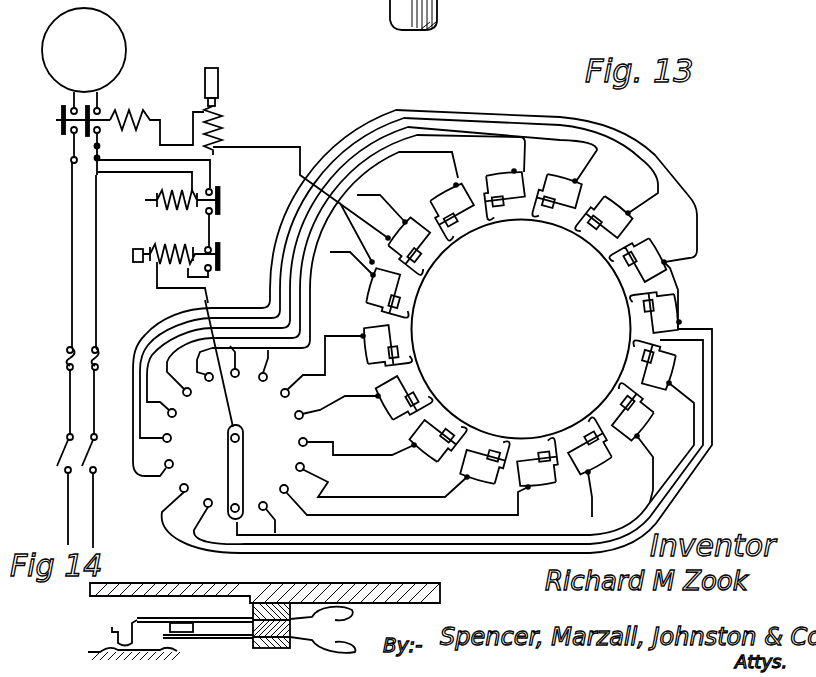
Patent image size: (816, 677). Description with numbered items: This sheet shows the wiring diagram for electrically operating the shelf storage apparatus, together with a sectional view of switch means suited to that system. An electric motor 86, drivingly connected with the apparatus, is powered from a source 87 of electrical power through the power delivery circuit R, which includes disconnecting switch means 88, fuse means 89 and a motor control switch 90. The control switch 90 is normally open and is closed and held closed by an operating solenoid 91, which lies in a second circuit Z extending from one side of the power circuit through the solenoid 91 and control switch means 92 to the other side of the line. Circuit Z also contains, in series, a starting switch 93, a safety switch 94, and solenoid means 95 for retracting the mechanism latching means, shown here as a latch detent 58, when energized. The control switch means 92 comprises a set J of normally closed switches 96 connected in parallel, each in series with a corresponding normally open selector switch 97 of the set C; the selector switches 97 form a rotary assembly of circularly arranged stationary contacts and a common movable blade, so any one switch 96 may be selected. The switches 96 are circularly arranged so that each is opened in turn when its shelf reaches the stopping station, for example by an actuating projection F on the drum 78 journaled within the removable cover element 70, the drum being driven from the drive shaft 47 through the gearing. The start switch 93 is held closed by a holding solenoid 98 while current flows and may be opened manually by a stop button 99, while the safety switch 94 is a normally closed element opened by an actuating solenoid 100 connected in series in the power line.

In FIG. 13, the drive shaft 47 is at (392, 12).
In FIG. 13, the latch detent 58 is at (205, 74).
In FIG. 14, the removable element 70 is at (183, 584).
In FIG. 13, the drum 78 is at (521, 329).
In FIG. 14, the drum 78 is at (178, 656).
In FIG. 13, the electric motor 86 is at (84, 58).
In FIG. 13, the source of electrical power 87 is at (67, 509).
In FIG. 13, the disconnecting switch means 88 is at (58, 458).
In FIG. 13, the fuse means 89 is at (65, 357).
In FIG. 13, the motor control switch 90 is at (62, 128).
In FIG. 13, the operating solenoid 91 is at (133, 112).
In FIG. 13, the control switch means 92 is at (722, 432).
In FIG. 13, the starting switch 93 is at (222, 257).
In FIG. 13, the safety switch 94 is at (221, 196).
In FIG. 13, the solenoid means 95 is at (222, 130).
In FIG. 13, the normally closed switches 96 is at (453, 186).
In FIG. 14, the normally closed switches 96 is at (130, 621).
In FIG. 13, the normally open selector switches 97 is at (246, 446).
In FIG. 13, the holding solenoid 98 is at (173, 250).
In FIG. 13, the stop button 99 is at (139, 263).
In FIG. 13, the actuating solenoid 100 is at (157, 205).